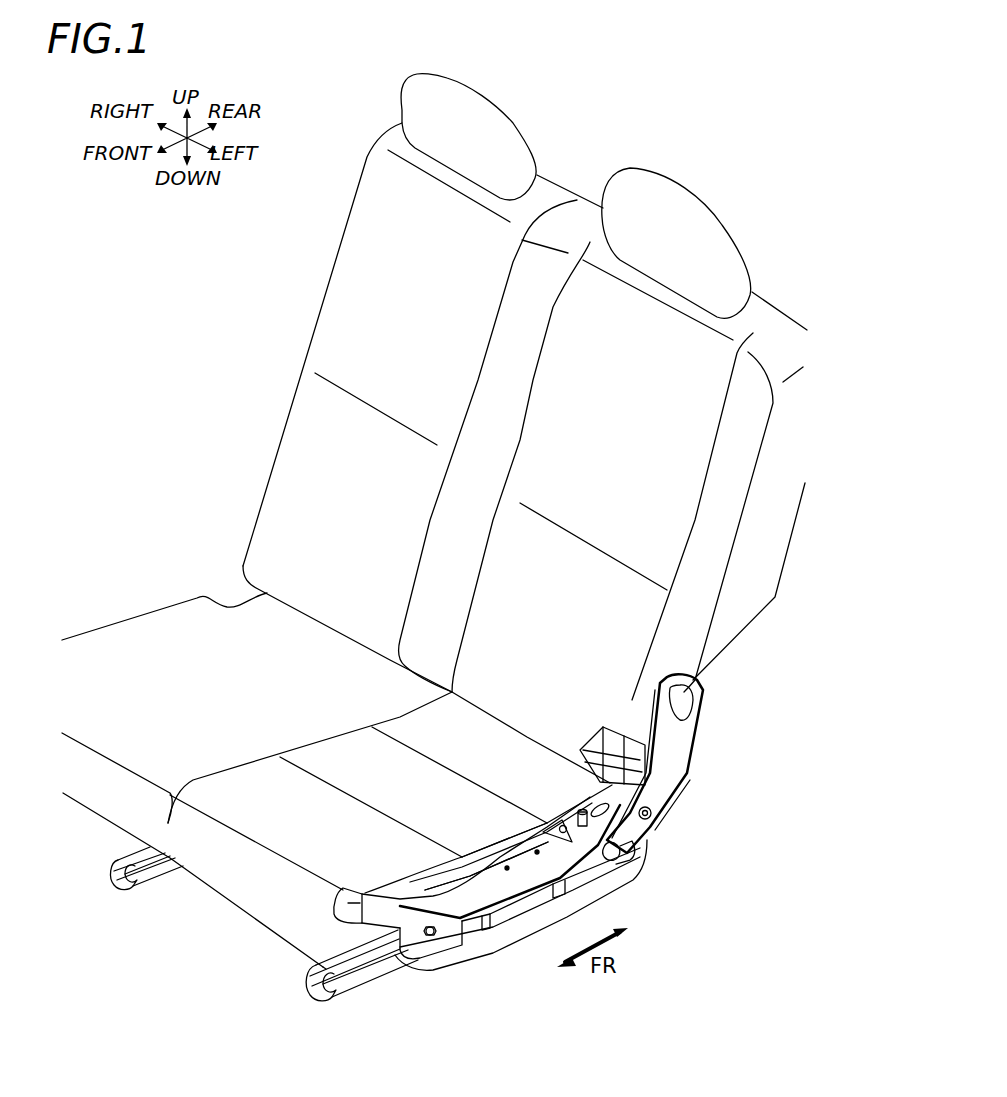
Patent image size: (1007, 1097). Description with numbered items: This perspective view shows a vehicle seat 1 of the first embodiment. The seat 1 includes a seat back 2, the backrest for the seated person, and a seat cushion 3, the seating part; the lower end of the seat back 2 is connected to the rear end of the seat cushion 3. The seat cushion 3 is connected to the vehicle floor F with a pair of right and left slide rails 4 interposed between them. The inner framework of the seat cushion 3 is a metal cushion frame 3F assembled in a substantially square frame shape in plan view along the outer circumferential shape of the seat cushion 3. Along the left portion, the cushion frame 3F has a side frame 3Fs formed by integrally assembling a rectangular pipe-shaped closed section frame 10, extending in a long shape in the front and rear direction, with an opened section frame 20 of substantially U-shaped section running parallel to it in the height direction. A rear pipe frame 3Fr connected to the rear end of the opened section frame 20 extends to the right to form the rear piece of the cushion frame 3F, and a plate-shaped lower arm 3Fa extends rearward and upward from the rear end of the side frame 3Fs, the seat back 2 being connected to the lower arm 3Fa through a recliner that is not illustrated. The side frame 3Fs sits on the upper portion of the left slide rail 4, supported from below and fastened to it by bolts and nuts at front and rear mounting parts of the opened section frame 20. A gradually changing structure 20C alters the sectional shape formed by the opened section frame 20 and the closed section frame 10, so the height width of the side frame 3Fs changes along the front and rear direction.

The seat 1 is at (200, 278).
The seat back 2 is at (330, 323).
The seat cushion 3 is at (178, 617).
The cushion frame 3F is at (401, 934).
The side frame 3Fs is at (561, 1033).
The rear pipe frame 3Fr is at (610, 735).
The lower arm 3Fa is at (677, 740).
The slide rail 4 is at (125, 900).
The closed section frame 10 is at (537, 885).
The opened section frame 20 is at (503, 912).
The gradually changing structure 20C is at (486, 866).
The floor F is at (203, 962).